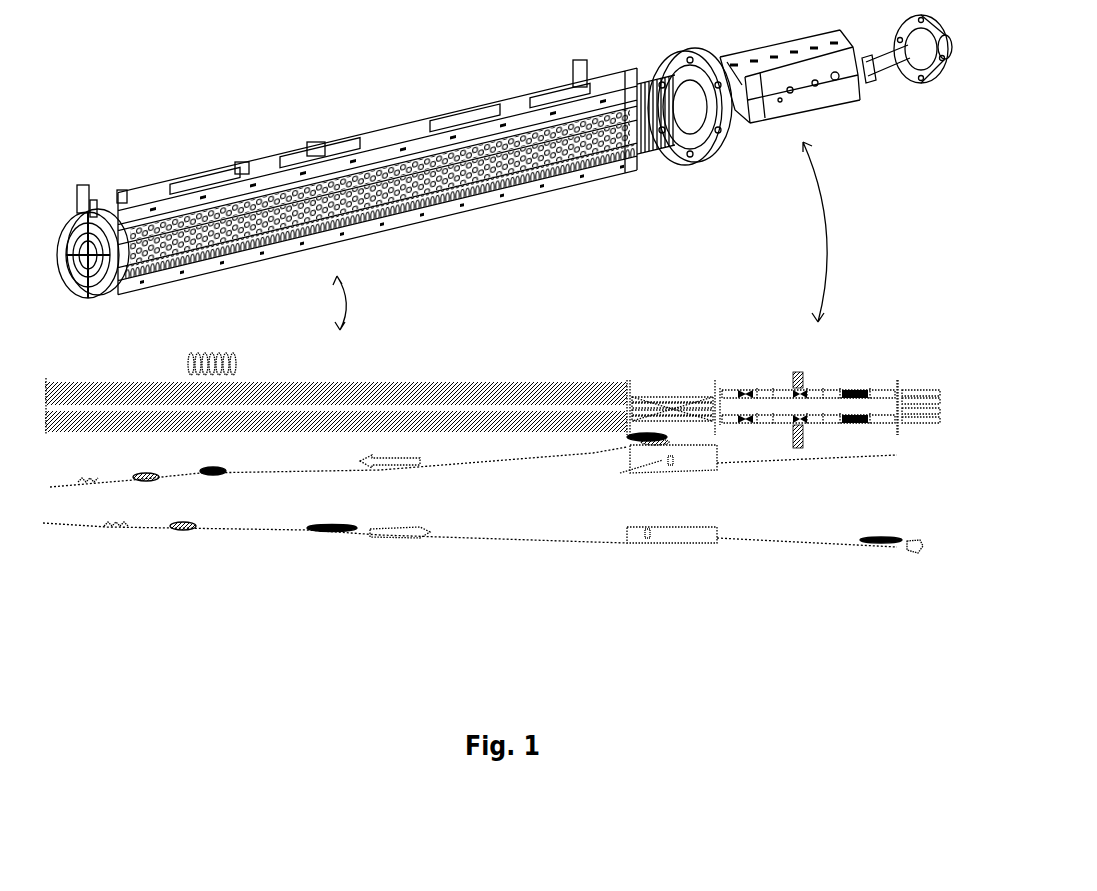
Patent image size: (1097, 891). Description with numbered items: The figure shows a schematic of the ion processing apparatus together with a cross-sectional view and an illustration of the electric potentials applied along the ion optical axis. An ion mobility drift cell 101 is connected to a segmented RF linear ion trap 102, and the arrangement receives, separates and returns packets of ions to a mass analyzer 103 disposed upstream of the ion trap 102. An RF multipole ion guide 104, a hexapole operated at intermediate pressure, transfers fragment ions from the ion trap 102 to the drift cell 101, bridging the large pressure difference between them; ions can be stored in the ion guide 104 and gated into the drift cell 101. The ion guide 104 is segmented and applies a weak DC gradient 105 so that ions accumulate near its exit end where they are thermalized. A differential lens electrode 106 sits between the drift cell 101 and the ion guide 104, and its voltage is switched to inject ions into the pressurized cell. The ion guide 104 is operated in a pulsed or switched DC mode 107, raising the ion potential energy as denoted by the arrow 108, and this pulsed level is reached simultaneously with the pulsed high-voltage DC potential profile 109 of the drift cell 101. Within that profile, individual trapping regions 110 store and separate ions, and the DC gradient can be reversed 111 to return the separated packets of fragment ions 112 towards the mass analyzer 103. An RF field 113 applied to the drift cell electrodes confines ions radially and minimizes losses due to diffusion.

The ion mobility drift cell 101 is at (398, 372).
The RF linear ion trap 102 is at (850, 382).
The mass analyzer 103 is at (890, 515).
The RF multipole ion guide 104 is at (670, 377).
The weak DC gradient 105 is at (712, 473).
The differential lens electrode 106 is at (630, 377).
The pulsed DC mode 107 is at (683, 495).
The arrow 108 is at (660, 460).
The pulsed DC potential profile 109 is at (517, 468).
The trapping regions 110 is at (210, 462).
The reversed DC gradient 111 is at (153, 535).
The separated packets of fragment ions 112 is at (527, 552).
The RF field 113 is at (173, 362).